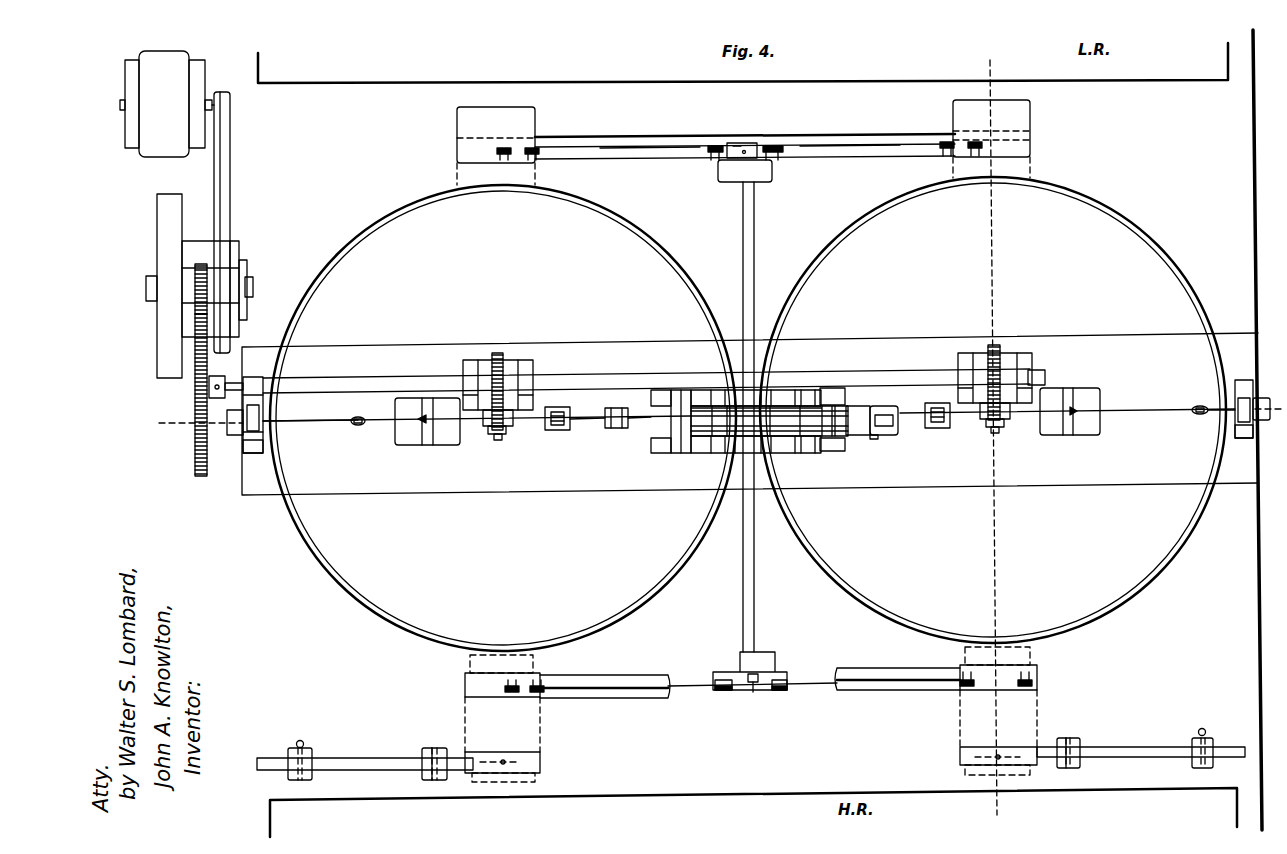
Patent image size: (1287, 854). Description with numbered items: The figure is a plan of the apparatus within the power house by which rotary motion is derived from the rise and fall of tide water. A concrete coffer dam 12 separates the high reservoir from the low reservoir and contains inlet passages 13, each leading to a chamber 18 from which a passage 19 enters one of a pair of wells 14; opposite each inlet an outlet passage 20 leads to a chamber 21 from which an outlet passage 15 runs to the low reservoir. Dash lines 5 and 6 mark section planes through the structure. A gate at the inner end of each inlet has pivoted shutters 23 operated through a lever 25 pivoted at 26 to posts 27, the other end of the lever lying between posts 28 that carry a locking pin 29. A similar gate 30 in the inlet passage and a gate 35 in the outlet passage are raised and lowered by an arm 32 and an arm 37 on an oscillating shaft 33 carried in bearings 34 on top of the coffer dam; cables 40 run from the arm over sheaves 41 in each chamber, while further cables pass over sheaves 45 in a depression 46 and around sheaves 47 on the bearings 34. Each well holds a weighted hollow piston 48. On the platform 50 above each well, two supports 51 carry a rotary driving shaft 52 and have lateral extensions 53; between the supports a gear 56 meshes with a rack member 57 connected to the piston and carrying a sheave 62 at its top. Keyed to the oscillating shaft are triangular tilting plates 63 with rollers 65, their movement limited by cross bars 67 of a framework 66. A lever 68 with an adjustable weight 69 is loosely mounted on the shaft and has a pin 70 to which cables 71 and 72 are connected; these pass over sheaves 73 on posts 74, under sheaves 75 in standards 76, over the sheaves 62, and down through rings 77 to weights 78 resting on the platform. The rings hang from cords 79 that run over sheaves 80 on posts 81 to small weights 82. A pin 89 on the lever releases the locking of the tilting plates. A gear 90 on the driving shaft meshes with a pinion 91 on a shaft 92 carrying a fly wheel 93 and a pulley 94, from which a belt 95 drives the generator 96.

The section line 5 is at (717, 417).
The section line 6 is at (992, 432).
The coffer dam 12 is at (738, 788).
The inlet passage 13 is at (538, 779).
The well 14 is at (330, 575).
The outlet passage 15 is at (470, 96).
The chamber 18 is at (542, 735).
The passage 19 is at (470, 663).
The outlet passage 20 is at (456, 176).
The chamber 21 is at (528, 121).
The shutters 23 is at (530, 762).
The lever 25 is at (383, 770).
The pivot 26 is at (430, 748).
The posts 27 is at (422, 752).
The posts 28 is at (312, 755).
The locking pin 29 is at (300, 741).
The gate 30 is at (465, 682).
The arm 32 is at (756, 684).
The oscillating shaft 33 is at (755, 238).
The bearings 34 is at (766, 182).
The gate 35 is at (460, 137).
The arm 37 is at (752, 143).
The cables 40 is at (637, 152).
The sheaves 41 is at (503, 160).
The sheave 45 is at (535, 160).
The depression 46 is at (850, 158).
The sheave 47 is at (715, 145).
The piston 48 is at (390, 602).
The platform 50 is at (592, 346).
The supports 51 is at (470, 360).
The rotary driving shaft 52 is at (362, 374).
The lateral extensions 53 is at (480, 425).
The gear 56 is at (497, 353).
The rack member 57 is at (498, 440).
The sheave 62 is at (492, 434).
The triangular plates 63 is at (700, 395).
The rollers 65 is at (700, 420).
The framework 66 is at (660, 390).
The cross bars 67 is at (652, 436).
The lever 68 is at (888, 427).
The weight 69 is at (870, 408).
The pin 70 is at (840, 408).
The cable 71 is at (378, 419).
The cable 72 is at (1035, 420).
The sheaves 73 is at (603, 414).
The posts 74 is at (615, 428).
The sheaves 75 is at (555, 430).
The standards 76 is at (566, 430).
The rings 77 is at (358, 426).
The weights 78 is at (412, 446).
The cords 79 is at (1210, 415).
The sheaves 80 is at (264, 413).
The posts 81 is at (264, 447).
The small weights 82 is at (235, 436).
The pin 89 is at (820, 406).
The gear 90 is at (196, 455).
The pinion 91 is at (200, 264).
The shaft 92 is at (251, 282).
The fly wheel 93 is at (163, 340).
The pulley 94 is at (240, 312).
The belt 95 is at (231, 170).
The generator 96 is at (145, 150).